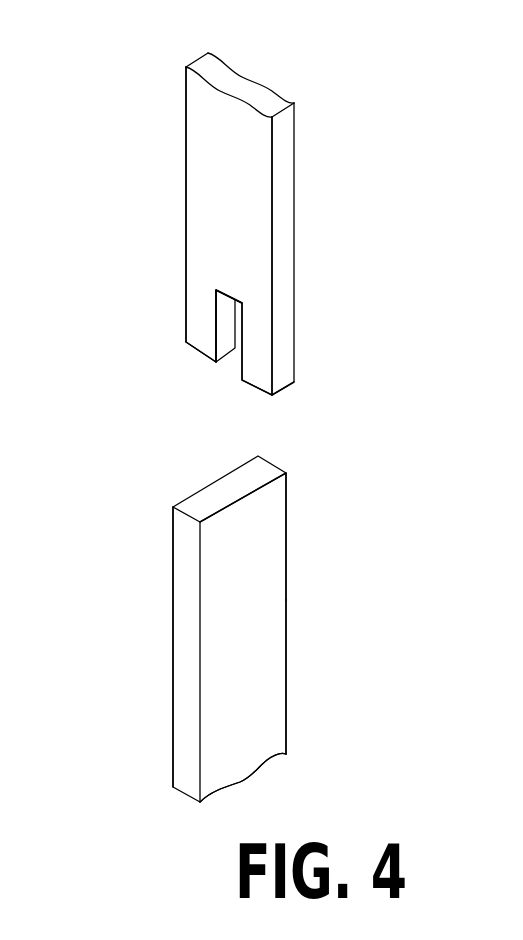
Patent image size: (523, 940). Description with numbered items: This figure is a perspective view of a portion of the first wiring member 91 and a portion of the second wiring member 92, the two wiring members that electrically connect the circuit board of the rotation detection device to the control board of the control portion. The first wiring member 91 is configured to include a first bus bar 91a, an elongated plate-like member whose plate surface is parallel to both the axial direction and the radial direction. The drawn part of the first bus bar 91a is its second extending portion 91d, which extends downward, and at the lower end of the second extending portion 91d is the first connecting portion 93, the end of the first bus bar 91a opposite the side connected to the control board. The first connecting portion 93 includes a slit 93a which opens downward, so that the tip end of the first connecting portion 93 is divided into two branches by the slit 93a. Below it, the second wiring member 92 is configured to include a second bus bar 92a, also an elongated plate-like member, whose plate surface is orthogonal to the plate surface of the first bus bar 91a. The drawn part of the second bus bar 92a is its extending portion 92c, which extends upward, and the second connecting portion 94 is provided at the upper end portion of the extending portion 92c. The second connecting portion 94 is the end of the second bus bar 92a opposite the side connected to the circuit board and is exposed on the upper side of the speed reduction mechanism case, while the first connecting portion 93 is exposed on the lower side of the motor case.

The first wiring member 91 is at (243, 210).
The first bus bar 91a is at (176, 118).
The second extending portion 91d is at (253, 183).
The first connecting portion 93 is at (255, 355).
The slit 93a is at (225, 319).
The second wiring member 92 is at (235, 629).
The second bus bar 92a is at (158, 637).
The extending portion 92c is at (262, 694).
The second connecting portion 94 is at (263, 563).